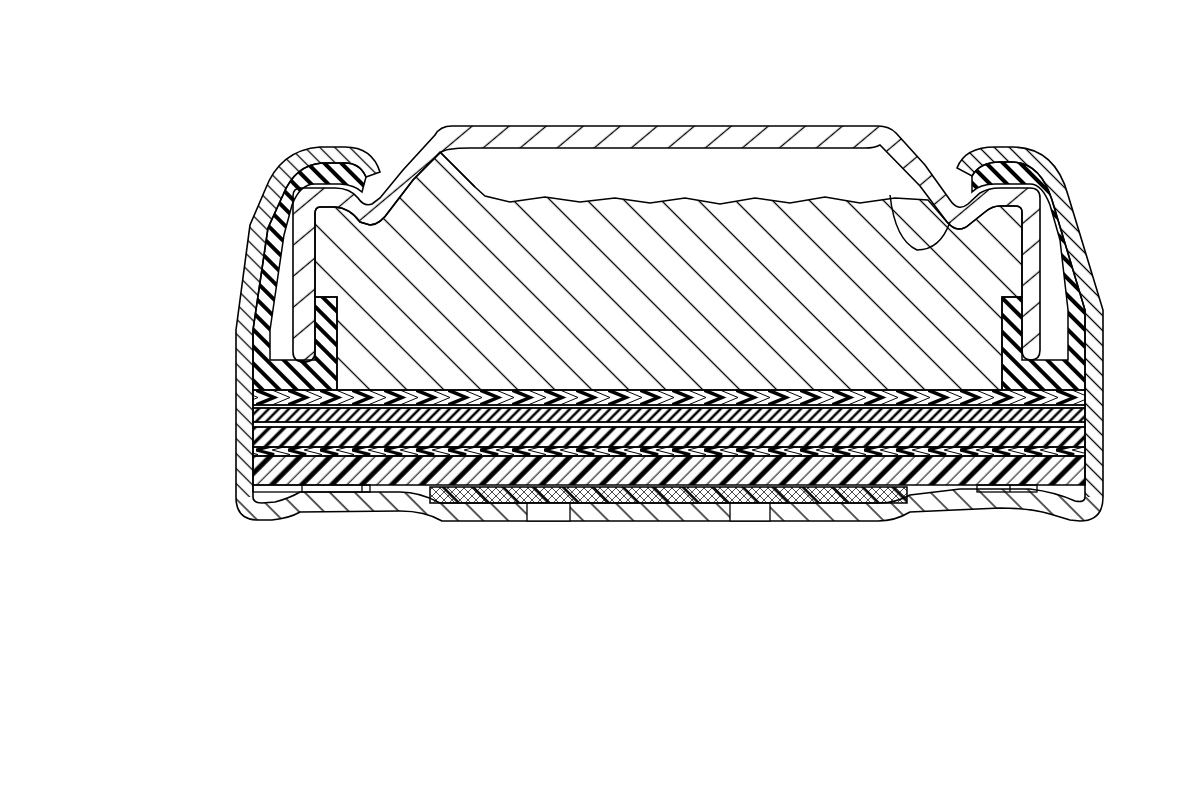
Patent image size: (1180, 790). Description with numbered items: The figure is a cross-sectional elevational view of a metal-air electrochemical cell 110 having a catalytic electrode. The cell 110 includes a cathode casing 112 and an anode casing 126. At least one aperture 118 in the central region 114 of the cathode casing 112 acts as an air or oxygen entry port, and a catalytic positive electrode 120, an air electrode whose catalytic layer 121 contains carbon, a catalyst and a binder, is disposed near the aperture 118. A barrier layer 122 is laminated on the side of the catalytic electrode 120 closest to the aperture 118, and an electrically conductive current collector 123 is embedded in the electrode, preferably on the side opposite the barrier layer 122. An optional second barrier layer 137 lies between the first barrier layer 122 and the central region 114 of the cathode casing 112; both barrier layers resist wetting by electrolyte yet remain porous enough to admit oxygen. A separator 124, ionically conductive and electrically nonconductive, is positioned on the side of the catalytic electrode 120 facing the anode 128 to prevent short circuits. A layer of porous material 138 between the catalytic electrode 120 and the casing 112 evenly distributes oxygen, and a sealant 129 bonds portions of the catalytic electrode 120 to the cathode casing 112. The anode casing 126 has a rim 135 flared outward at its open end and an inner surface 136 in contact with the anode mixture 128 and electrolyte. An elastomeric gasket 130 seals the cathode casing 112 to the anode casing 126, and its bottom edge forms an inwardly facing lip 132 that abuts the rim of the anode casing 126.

The cell 110 is at (356, 96).
The cathode casing 112 is at (262, 225).
The central region 114 is at (472, 522).
The aperture 118 is at (548, 519).
The catalytic positive electrode 120 is at (1085, 417).
The catalytic layer 121 is at (255, 421).
The barrier layer 122 is at (1085, 443).
The current collector 123 is at (250, 427).
The separator 124 is at (250, 396).
The anode casing 126 is at (548, 126).
The anode 128 is at (613, 205).
The sealant 129 is at (326, 492).
The gasket 130 is at (1090, 278).
The inwardly facing lip 132 is at (463, 189).
The rim 135 is at (265, 357).
The inner surface 136 is at (890, 195).
The second barrier layer 137 is at (1085, 465).
The porous material 138 is at (728, 503).